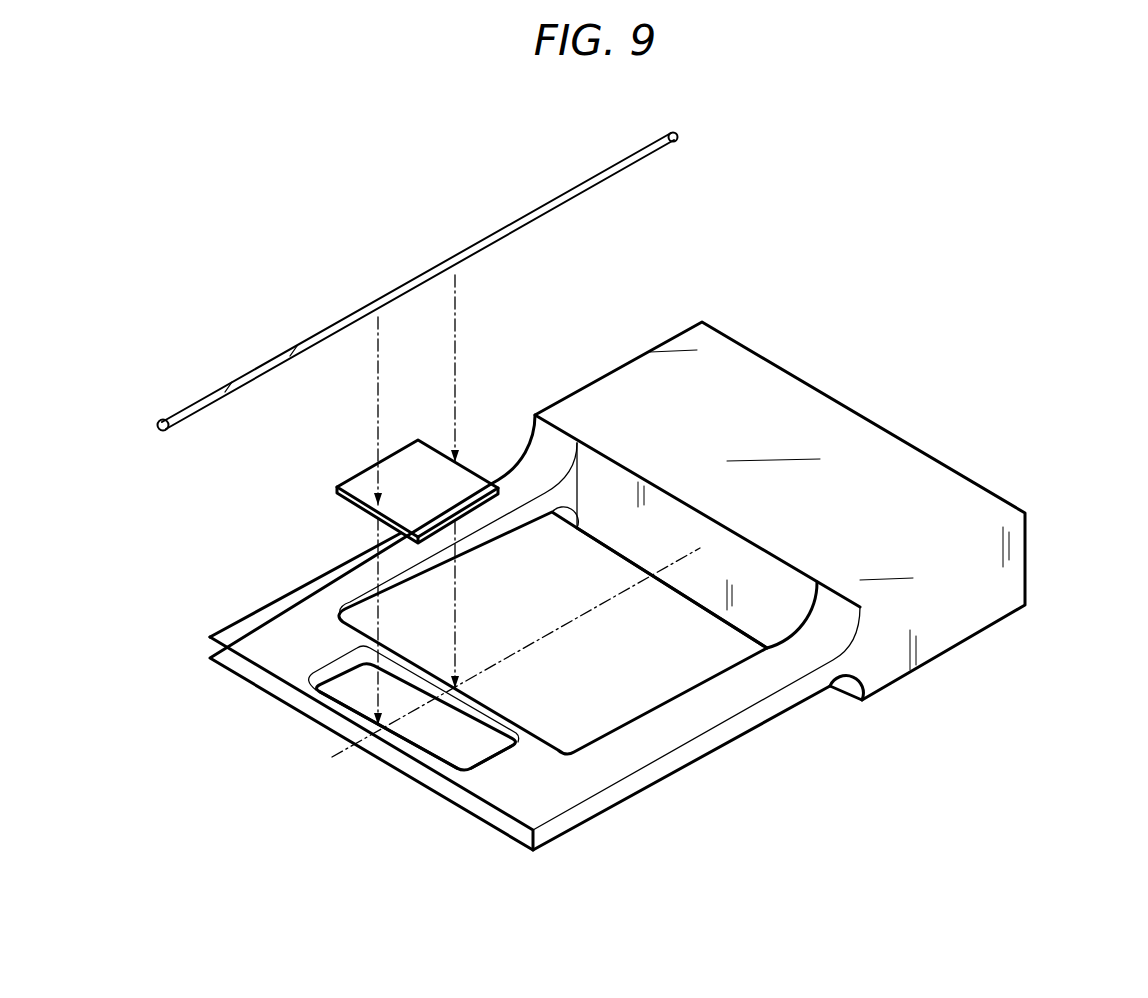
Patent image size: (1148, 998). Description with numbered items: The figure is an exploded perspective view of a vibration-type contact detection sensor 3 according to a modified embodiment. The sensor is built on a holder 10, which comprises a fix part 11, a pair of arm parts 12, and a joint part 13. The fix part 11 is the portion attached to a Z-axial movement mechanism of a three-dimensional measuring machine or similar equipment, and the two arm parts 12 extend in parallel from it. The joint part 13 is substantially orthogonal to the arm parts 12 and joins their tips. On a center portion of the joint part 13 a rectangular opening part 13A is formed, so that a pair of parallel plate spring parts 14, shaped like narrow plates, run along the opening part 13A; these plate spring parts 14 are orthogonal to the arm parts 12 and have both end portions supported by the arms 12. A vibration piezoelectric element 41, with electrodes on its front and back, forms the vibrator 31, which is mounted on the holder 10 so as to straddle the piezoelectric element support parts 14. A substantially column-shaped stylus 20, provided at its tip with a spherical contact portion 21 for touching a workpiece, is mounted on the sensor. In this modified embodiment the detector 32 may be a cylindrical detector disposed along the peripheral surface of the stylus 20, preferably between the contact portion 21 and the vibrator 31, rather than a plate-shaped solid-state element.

The vibration-type contact detection sensor 3 is at (814, 328).
The holder 10 is at (954, 497).
The fix part 11 is at (882, 448).
The arm parts 12 is at (310, 600).
The joint part 13 is at (533, 777).
The rectangular opening part 13A is at (328, 692).
The parallel plate spring parts 14 is at (340, 728).
The stylus 20 is at (455, 245).
The spherical contact portion 21 is at (160, 416).
The vibrator 31 is at (353, 465).
The detector 32 is at (266, 360).
The vibration piezoelectric element 41 is at (413, 473).